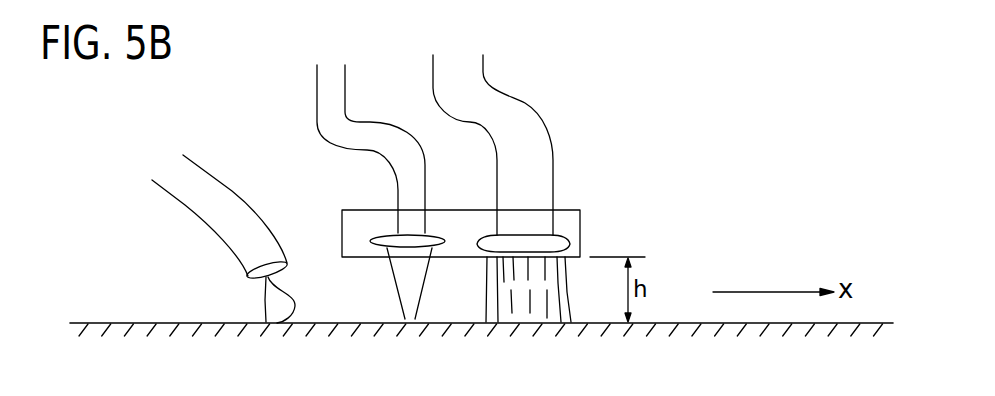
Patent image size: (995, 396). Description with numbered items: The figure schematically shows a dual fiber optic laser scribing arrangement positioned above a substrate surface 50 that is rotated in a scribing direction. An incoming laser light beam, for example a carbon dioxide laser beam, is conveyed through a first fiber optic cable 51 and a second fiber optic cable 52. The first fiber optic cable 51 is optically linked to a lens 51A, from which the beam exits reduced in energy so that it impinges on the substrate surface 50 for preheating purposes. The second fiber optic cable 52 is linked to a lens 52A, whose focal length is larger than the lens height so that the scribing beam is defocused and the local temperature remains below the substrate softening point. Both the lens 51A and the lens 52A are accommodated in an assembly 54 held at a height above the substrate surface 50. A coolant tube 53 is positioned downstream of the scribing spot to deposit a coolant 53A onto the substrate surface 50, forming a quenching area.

The substrate surface 50 is at (481, 348).
The first fiber optic cable 51 is at (482, 80).
The lens 51A is at (537, 242).
The second fiber optic cable 52 is at (326, 98).
The lens 52A is at (372, 208).
The coolant tube 53 is at (173, 162).
The coolant 53A is at (266, 306).
The assembly 54 is at (578, 225).